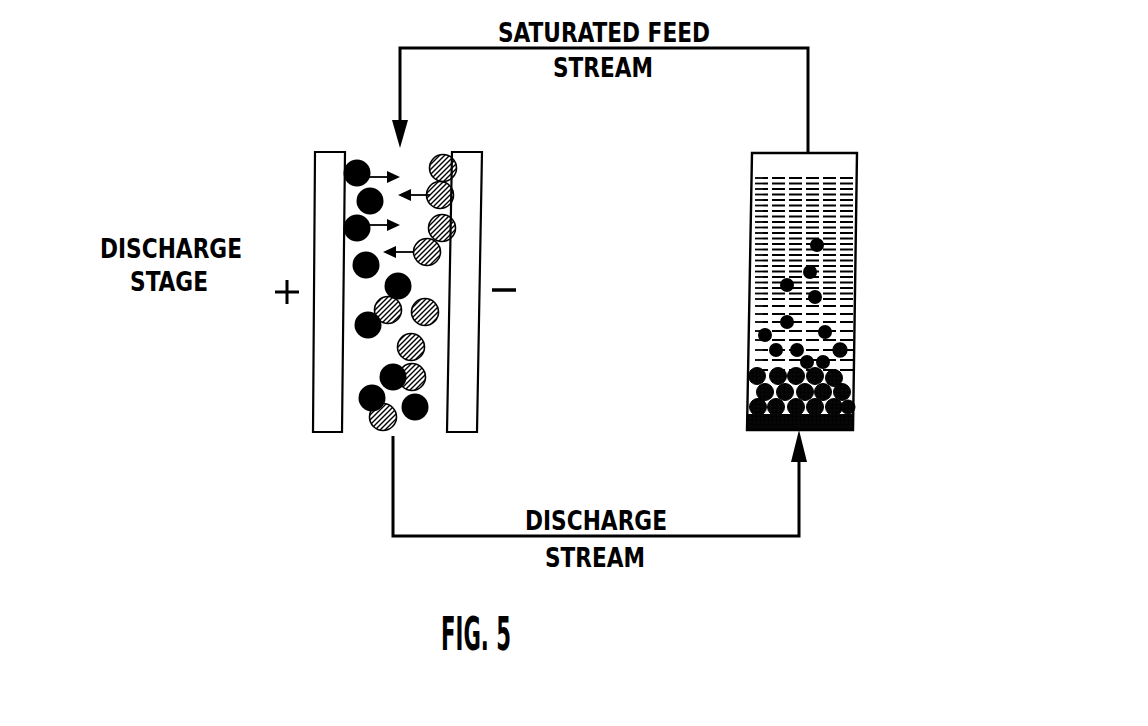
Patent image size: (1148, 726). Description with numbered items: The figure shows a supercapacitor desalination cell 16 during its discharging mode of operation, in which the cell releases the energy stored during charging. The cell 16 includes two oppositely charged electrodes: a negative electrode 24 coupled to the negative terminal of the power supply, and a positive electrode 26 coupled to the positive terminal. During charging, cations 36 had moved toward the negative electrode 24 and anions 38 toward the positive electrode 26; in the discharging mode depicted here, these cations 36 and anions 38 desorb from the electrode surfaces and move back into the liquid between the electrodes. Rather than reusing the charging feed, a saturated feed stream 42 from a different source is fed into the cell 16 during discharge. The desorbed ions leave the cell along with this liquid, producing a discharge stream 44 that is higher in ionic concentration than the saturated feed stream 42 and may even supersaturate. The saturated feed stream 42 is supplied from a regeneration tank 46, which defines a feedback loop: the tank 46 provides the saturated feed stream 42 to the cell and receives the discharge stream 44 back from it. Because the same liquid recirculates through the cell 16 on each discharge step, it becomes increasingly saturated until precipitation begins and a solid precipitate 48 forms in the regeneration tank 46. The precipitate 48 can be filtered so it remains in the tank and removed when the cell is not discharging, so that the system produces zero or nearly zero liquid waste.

The supercapacitor desalination cell 16 is at (243, 328).
The negative electrode 24 is at (480, 252).
The positive electrode 26 is at (313, 347).
The cations 36 is at (378, 434).
The anions 38 is at (372, 434).
The saturated feed stream 42 is at (400, 82).
The discharge stream 44 is at (393, 493).
The regeneration tank 46 is at (856, 250).
The solid precipitate 48 is at (855, 410).